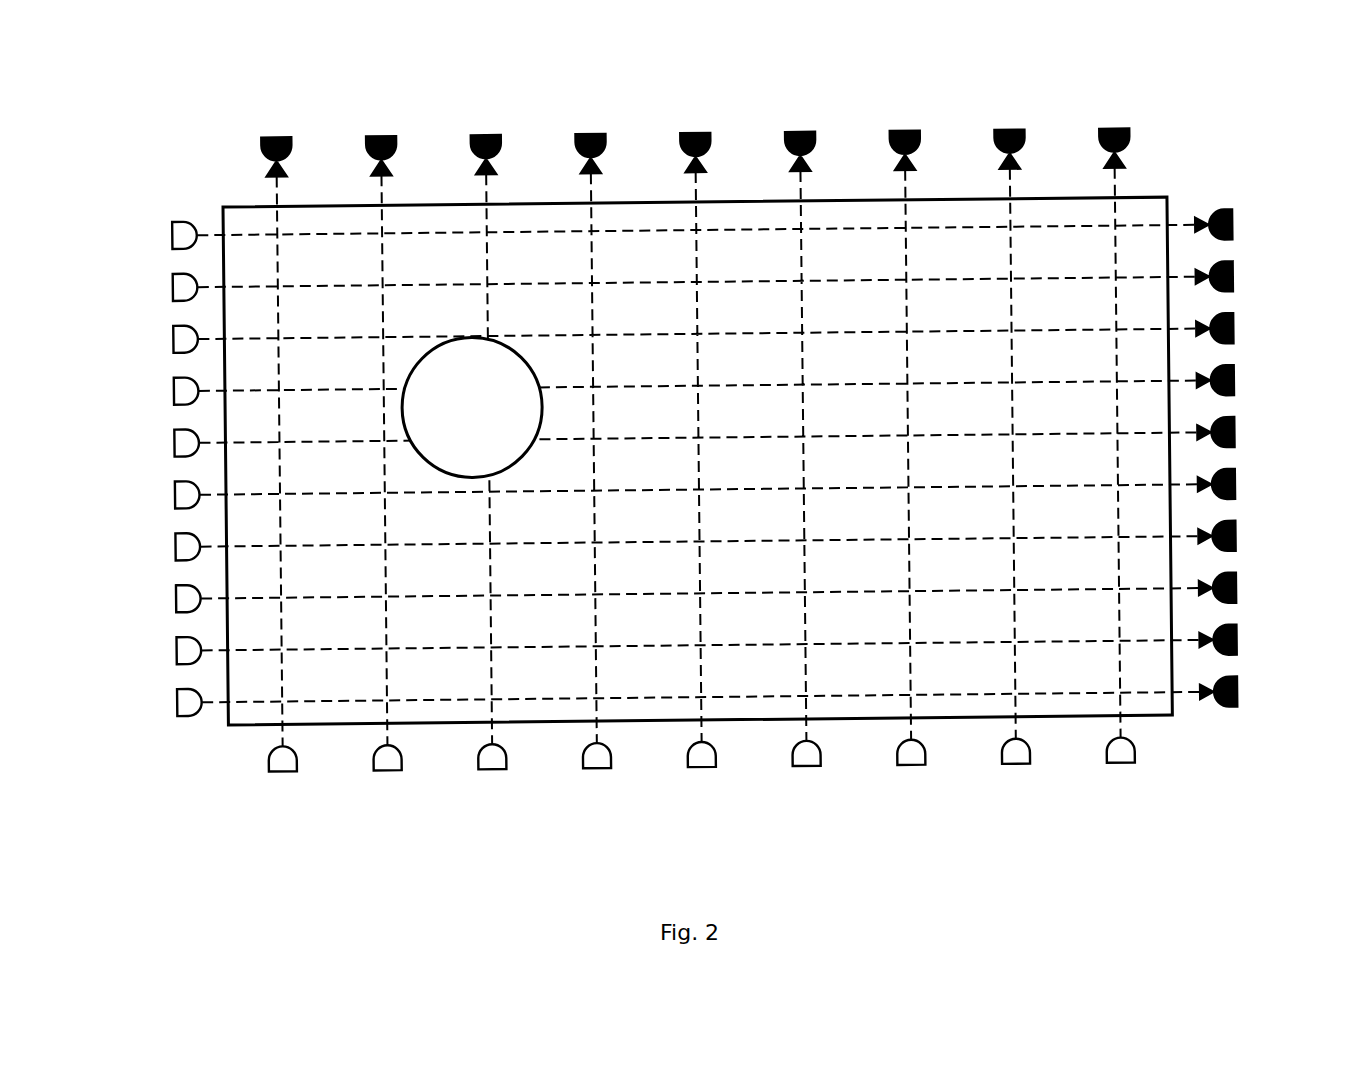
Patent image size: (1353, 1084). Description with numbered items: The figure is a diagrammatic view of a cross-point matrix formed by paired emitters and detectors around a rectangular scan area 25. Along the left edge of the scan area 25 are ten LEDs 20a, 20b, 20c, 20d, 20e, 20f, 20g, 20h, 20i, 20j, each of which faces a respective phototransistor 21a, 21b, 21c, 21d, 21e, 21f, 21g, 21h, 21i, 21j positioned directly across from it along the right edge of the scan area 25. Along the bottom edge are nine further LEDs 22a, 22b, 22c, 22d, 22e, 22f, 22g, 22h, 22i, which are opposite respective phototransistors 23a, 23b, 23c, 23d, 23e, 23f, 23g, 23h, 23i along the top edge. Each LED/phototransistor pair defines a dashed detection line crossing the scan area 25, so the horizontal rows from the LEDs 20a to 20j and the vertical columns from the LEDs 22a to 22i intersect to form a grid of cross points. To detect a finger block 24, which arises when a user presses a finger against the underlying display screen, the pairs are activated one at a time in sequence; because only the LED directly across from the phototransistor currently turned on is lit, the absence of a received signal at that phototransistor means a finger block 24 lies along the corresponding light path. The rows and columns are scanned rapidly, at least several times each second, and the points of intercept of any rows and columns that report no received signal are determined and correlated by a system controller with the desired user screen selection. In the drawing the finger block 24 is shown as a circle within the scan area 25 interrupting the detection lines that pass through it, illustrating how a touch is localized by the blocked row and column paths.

The LED 20a is at (172, 236).
The LED 20b is at (172, 288).
The LED 20c is at (172, 340).
The LED 20d is at (172, 392).
The LED 20e is at (172, 444).
The LED 20f is at (172, 496).
The LED 20g is at (172, 547).
The LED 20h is at (172, 599).
The LED 20i is at (172, 651).
The LED 20j is at (172, 703).
The phototransistor 21a is at (1232, 233).
The phototransistor 21b is at (1232, 285).
The phototransistor 21c is at (1232, 337).
The phototransistor 21d is at (1232, 389).
The phototransistor 21e is at (1232, 441).
The phototransistor 21f is at (1232, 492).
The phototransistor 21g is at (1232, 544).
The phototransistor 21h is at (1232, 596).
The phototransistor 21i is at (1232, 648).
The phototransistor 21j is at (1232, 700).
The LED 22a is at (277, 773).
The LED 22b is at (382, 773).
The LED 22c is at (486, 773).
The LED 22d is at (591, 773).
The LED 22e is at (696, 773).
The LED 22f is at (801, 773).
The LED 22g is at (906, 773).
The LED 22h is at (1010, 773).
The LED 22i is at (1115, 773).
The phototransistor 23a is at (277, 138).
The phototransistor 23b is at (382, 138).
The phototransistor 23c is at (486, 138).
The phototransistor 23d is at (591, 138).
The phototransistor 23e is at (696, 138).
The phototransistor 23f is at (801, 138).
The phototransistor 23g is at (906, 138).
The phototransistor 23h is at (1010, 138).
The phototransistor 23i is at (1115, 138).
The finger block 24 is at (540, 421).
The scan area 25 is at (328, 669).